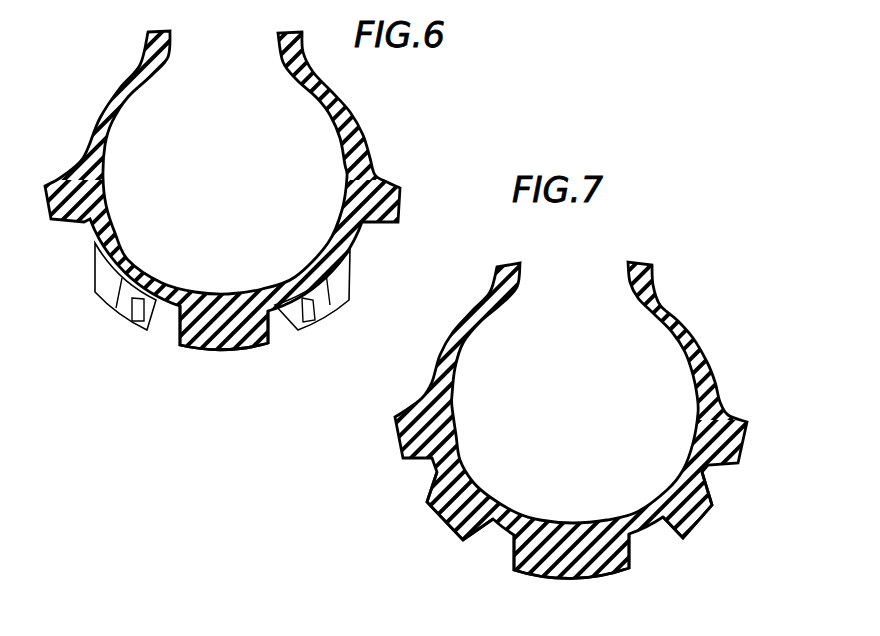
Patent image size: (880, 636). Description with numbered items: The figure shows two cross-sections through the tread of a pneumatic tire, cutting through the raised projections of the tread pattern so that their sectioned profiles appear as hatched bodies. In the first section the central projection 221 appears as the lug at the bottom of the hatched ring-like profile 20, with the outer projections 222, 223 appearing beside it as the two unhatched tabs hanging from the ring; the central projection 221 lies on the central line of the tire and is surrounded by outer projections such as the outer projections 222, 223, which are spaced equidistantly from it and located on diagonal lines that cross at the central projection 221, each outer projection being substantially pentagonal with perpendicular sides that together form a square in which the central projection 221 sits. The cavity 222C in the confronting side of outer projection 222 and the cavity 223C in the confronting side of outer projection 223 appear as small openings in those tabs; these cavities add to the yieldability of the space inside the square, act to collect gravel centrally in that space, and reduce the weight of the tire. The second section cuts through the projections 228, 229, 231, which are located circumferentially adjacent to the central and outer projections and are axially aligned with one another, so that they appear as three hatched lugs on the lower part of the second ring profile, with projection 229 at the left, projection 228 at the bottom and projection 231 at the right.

In FIG. 6, the retaining clip 20 is at (338, 106).
In FIG. 6, the central projection 221 is at (226, 334).
In FIG. 6, the outer projection 222 is at (125, 295).
In FIG. 6, the cavity 222C is at (133, 315).
In FIG. 6, the outer projection 223 is at (326, 305).
In FIG. 6, the cavity 223C is at (314, 332).
In FIG. 7, the projection 228 is at (565, 557).
In FIG. 7, the projection 229 is at (450, 510).
In FIG. 7, the projection 231 is at (690, 515).